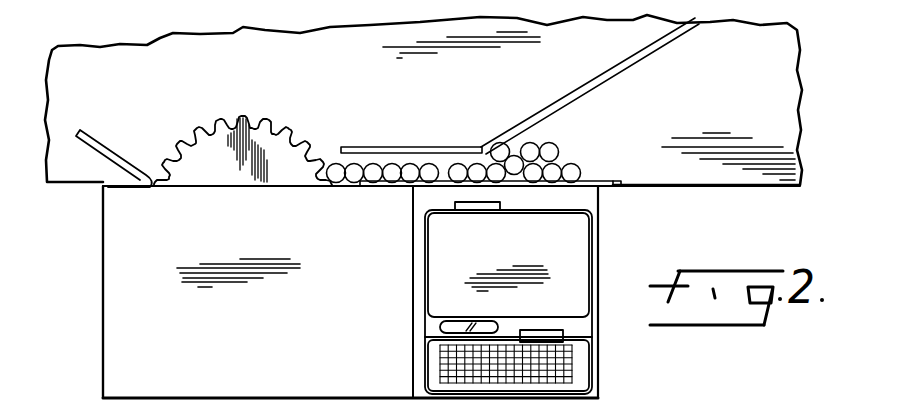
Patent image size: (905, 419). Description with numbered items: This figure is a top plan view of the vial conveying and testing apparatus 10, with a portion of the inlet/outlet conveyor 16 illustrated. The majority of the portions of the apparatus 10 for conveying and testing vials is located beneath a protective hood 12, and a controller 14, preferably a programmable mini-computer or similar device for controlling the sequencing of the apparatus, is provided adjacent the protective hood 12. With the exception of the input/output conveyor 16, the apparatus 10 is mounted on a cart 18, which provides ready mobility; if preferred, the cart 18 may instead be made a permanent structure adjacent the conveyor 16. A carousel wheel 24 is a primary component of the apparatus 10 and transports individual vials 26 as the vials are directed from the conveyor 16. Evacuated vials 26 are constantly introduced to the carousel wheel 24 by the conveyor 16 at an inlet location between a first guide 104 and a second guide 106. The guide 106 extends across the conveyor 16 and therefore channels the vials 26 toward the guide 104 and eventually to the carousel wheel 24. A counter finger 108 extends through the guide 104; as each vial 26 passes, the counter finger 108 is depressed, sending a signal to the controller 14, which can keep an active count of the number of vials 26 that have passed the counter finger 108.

The apparatus 10 is at (93, 278).
The protective hood 12 is at (113, 322).
The controller 14 is at (578, 268).
The input/output conveyor 16 is at (716, 174).
The cart 18 is at (597, 373).
The carousel wheel 24 is at (257, 133).
The vials 26 is at (352, 173).
The guide 104 is at (403, 190).
The guide 106 is at (417, 127).
The counter finger 108 is at (441, 178).